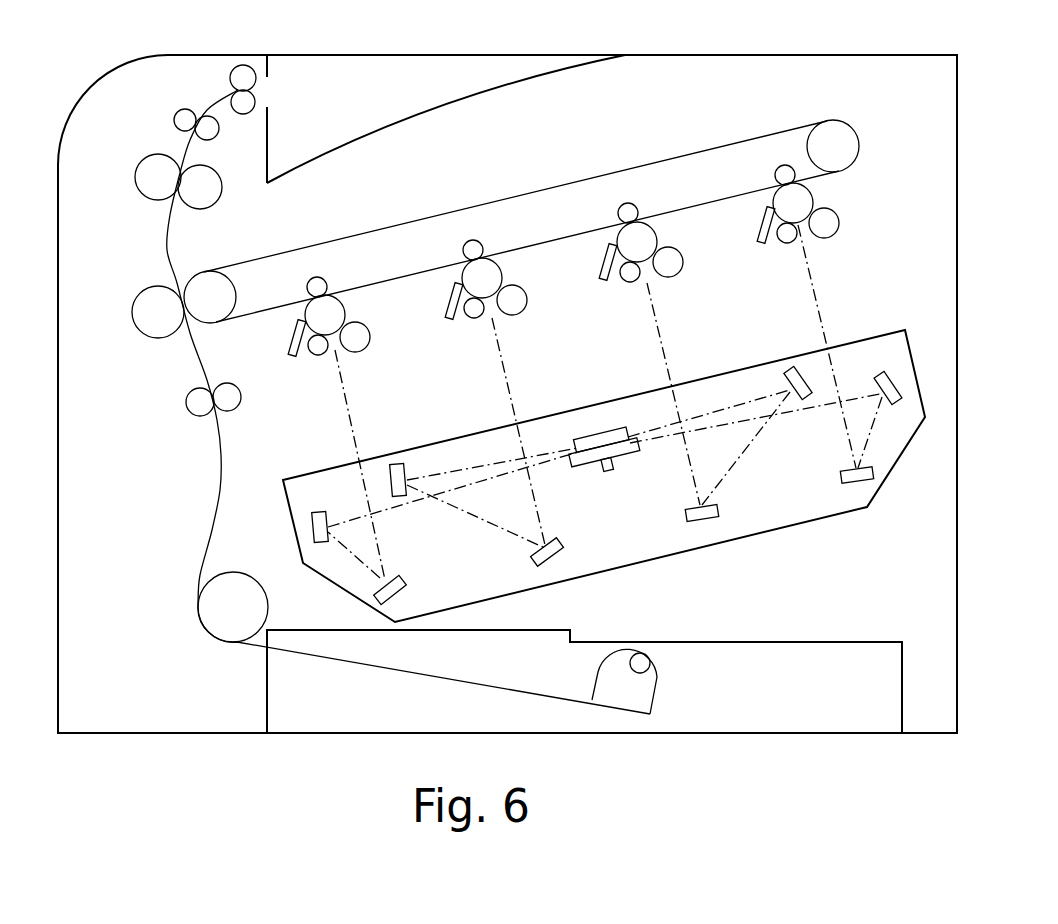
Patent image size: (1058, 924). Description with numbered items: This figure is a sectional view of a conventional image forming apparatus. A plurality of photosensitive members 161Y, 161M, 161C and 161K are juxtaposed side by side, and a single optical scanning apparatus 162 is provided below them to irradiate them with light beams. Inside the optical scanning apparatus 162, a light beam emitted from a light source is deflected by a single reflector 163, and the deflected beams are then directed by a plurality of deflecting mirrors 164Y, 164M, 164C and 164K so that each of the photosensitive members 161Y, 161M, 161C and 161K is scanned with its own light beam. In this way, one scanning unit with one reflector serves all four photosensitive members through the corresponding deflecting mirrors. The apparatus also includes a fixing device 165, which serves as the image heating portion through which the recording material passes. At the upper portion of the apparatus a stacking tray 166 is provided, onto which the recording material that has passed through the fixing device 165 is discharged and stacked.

The photosensitive member 161Y is at (340, 308).
The photosensitive member 161M is at (493, 270).
The photosensitive member 161C is at (650, 235).
The photosensitive member 161K is at (787, 200).
The optical scanning apparatus 162 is at (792, 530).
The reflector 163 is at (583, 433).
The deflecting mirror 164Y is at (322, 510).
The deflecting mirror 164M is at (397, 463).
The deflecting mirror 164C is at (797, 365).
The deflecting mirror 164K is at (878, 373).
The fixing device 165 is at (147, 172).
The stacking tray 166 is at (440, 105).